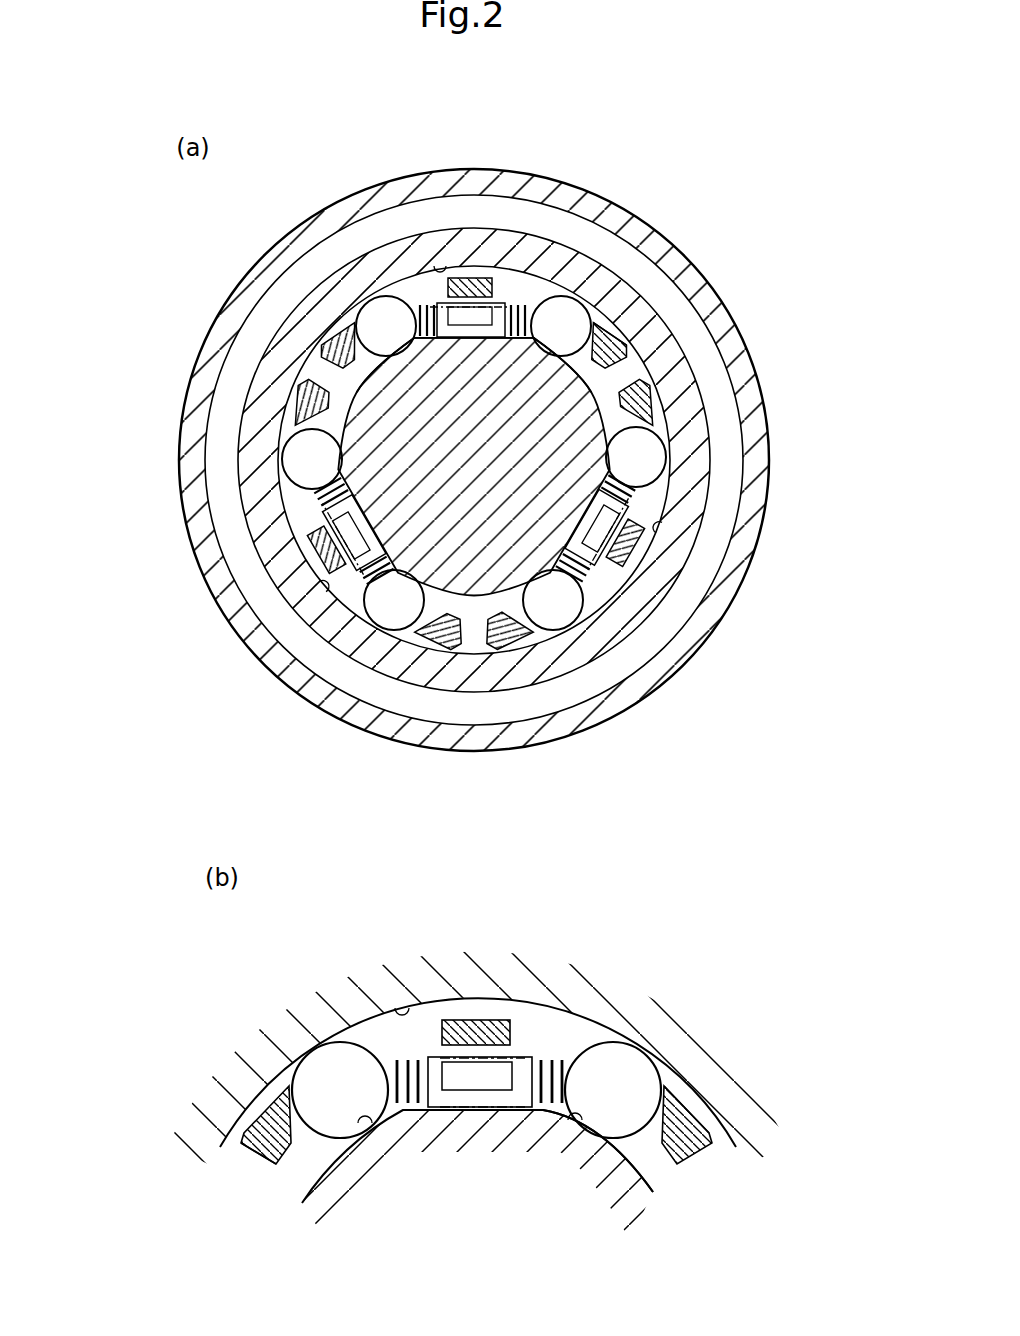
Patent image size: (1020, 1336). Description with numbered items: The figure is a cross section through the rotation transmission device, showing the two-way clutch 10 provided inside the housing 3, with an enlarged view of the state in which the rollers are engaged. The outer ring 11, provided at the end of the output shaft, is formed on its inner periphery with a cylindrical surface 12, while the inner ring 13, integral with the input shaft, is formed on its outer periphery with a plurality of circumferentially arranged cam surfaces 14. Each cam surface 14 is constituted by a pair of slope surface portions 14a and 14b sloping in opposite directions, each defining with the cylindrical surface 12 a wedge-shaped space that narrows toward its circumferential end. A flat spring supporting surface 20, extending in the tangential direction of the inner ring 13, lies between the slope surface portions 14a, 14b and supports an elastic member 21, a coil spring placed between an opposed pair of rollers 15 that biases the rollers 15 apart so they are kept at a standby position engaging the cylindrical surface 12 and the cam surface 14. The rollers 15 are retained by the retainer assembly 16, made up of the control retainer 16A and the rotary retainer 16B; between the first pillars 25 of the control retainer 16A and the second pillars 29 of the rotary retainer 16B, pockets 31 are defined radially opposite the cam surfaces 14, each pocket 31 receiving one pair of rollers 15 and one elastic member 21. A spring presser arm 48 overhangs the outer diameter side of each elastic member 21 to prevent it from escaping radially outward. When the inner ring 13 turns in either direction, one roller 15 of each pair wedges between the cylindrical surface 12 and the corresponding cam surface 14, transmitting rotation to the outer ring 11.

In FIG. 2a, the housing 3 is at (208, 347).
In FIG. 2a, the two-way clutch 10 is at (319, 331).
In FIG. 2b, the two-way clutch 10 is at (347, 1002).
In FIG. 2a, the outer ring 11 is at (382, 268).
In FIG. 2b, the outer ring 11 is at (310, 1013).
In FIG. 2a, the cylindrical surface 12 is at (445, 268).
In FIG. 2b, the cylindrical surface 12 is at (406, 1004).
In FIG. 2a, the inner ring 13 is at (592, 300).
In FIG. 2b, the inner ring 13 is at (468, 1028).
In FIG. 2a, the cam surface 14 is at (575, 345).
In FIG. 2b, the cam surface 14 is at (380, 1123).
In FIG. 2a, the slope surface portion 14a is at (605, 362).
In FIG. 2b, the slope surface portion 14a is at (560, 1123).
In FIG. 2a, the slope surface portion 14b is at (383, 348).
In FIG. 2b, the slope surface portion 14b is at (413, 1112).
In FIG. 2a, the roller 15 is at (380, 310).
In FIG. 2b, the roller 15 is at (627, 1060).
In FIG. 2a, the retainer assembly 16 is at (306, 343).
In FIG. 2a, the control retainer 16A is at (335, 345).
In FIG. 2b, the control retainer 16A is at (259, 1094).
In FIG. 2a, the rotary retainer 16B is at (639, 363).
In FIG. 2b, the rotary retainer 16B is at (722, 1119).
In FIG. 2a, the spring supporting surface 20 is at (495, 335).
In FIG. 2a, the elastic member 21 is at (528, 298).
In FIG. 2b, the elastic member 21 is at (552, 1060).
In FIG. 2a, the first pillar 25 is at (647, 407).
In FIG. 2b, the first pillar 25 is at (250, 1130).
In FIG. 2a, the second pillar 29 is at (622, 344).
In FIG. 2b, the second pillar 29 is at (683, 1110).
In FIG. 2a, the pocket 31 is at (300, 283).
In FIG. 2a, the spring presser arm 48 is at (620, 545).
In FIG. 2b, the spring presser arm 48 is at (480, 1082).